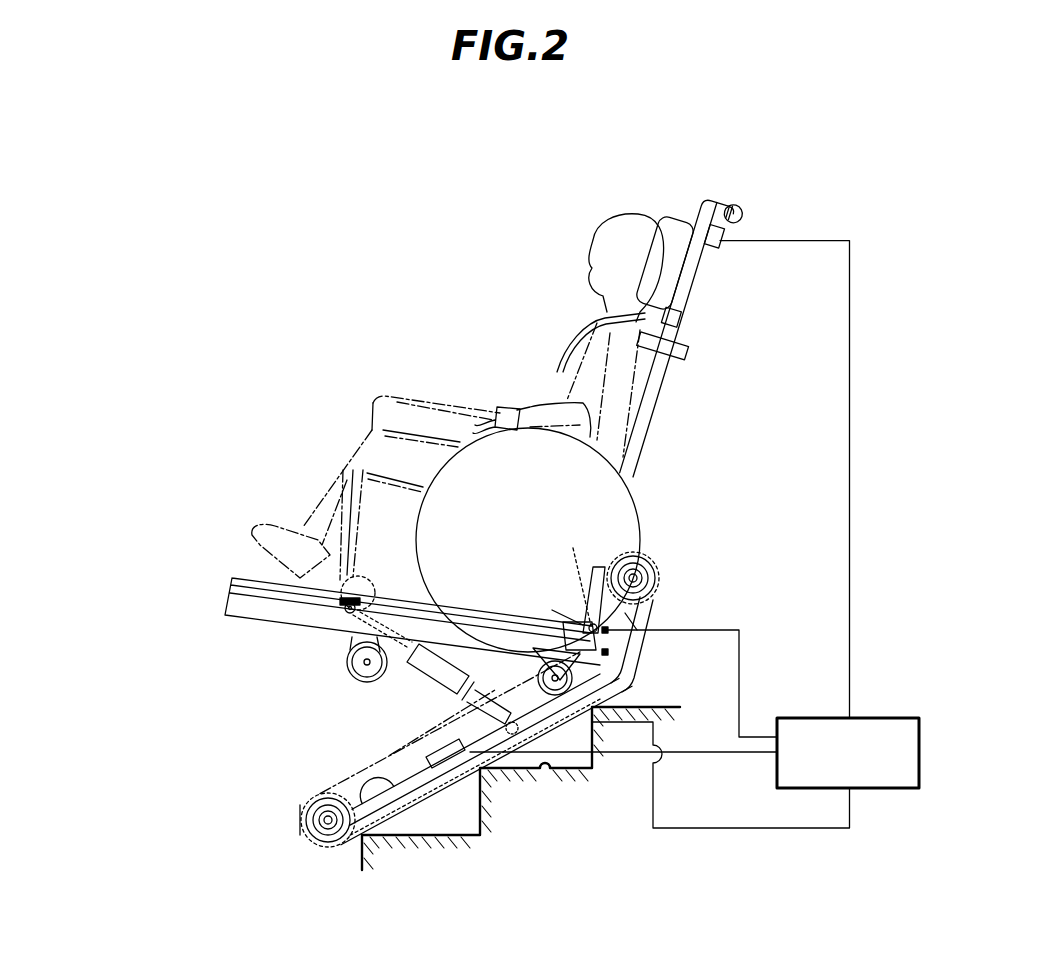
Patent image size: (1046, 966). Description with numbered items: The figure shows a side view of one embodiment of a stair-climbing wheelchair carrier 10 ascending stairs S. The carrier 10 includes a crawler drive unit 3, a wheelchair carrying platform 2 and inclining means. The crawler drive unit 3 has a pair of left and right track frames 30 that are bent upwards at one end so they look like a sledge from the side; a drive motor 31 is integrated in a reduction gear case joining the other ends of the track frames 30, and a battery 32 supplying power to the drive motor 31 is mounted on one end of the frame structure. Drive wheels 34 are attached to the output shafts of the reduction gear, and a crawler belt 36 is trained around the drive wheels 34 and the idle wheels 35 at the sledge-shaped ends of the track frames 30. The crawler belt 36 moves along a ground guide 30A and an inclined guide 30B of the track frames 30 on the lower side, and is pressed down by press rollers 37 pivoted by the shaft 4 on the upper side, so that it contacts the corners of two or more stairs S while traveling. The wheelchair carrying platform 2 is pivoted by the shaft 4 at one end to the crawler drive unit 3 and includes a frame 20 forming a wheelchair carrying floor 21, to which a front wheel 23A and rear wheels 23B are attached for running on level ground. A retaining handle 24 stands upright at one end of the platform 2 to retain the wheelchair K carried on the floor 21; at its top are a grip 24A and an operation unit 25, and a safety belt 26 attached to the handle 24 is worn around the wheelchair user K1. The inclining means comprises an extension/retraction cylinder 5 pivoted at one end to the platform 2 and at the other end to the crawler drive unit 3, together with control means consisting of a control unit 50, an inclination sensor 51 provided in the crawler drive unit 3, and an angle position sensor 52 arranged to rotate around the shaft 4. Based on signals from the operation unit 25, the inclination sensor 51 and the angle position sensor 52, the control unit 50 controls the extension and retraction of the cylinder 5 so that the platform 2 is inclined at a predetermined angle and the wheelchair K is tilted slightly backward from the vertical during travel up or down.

The wheelchair carrying platform 2 is at (182, 630).
The crawler drive unit 3 is at (275, 869).
The shaft 4 is at (648, 651).
The angle position sensor 52 is at (588, 626).
The extension/retraction cylinder 5 is at (428, 668).
The stair-climbing wheelchair carrier 10 is at (676, 428).
The frame 20 is at (262, 598).
The wheelchair carrying floor 21 is at (348, 600).
The front wheel 23A is at (350, 664).
The rear wheel 23B is at (575, 700).
The retaining handle 24 is at (640, 453).
The grip 24A is at (742, 212).
The operation unit 25 is at (722, 236).
The safety belt 26 is at (590, 322).
The track frame 30 is at (426, 780).
The ground guide 30A is at (460, 790).
The inclined guide 30B is at (640, 620).
The drive motor 31 is at (378, 775).
The battery 32 is at (532, 677).
The drive wheel 34 is at (305, 814).
The idle wheel 35 is at (655, 565).
The crawler belt 36 is at (626, 676).
The press roller 37 is at (573, 573).
The control unit 50 is at (880, 790).
The inclination sensor 51 is at (485, 793).
The wheelchair K is at (432, 392).
The wheelchair user K1 is at (640, 272).
The stairs S is at (553, 770).